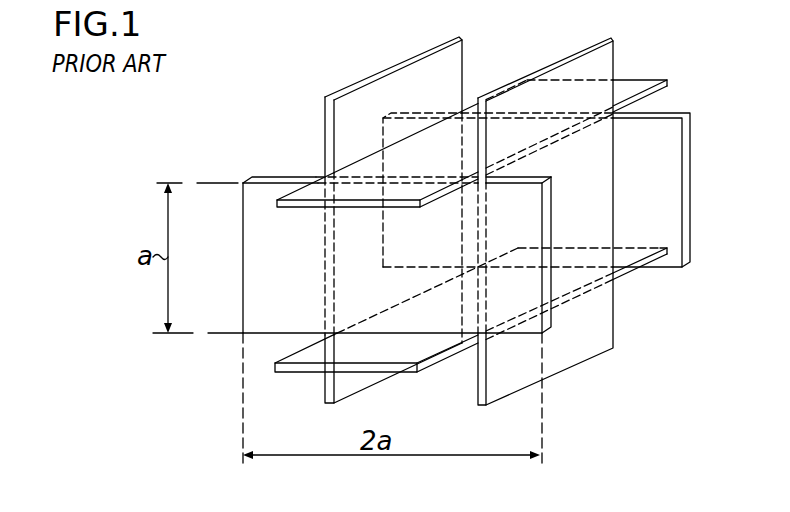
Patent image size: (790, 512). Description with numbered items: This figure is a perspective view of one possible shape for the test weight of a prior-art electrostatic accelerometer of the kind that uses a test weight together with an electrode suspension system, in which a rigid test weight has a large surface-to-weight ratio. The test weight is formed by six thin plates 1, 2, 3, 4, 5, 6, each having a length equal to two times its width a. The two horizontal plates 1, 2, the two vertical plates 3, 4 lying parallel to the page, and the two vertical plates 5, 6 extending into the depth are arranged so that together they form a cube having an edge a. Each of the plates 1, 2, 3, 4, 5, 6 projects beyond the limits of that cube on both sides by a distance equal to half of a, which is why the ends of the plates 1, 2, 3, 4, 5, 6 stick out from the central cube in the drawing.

The upper horizontal plate 1 is at (302, 206).
The lower horizontal plate 2 is at (298, 367).
The front vertical plate 3 is at (552, 320).
The rear vertical plate 4 is at (690, 188).
The right side vertical plate 5 is at (582, 54).
The left side vertical plate 6 is at (369, 78).